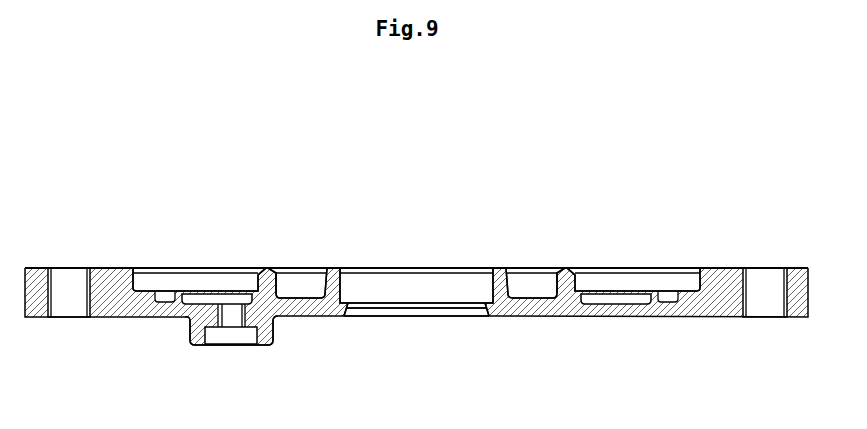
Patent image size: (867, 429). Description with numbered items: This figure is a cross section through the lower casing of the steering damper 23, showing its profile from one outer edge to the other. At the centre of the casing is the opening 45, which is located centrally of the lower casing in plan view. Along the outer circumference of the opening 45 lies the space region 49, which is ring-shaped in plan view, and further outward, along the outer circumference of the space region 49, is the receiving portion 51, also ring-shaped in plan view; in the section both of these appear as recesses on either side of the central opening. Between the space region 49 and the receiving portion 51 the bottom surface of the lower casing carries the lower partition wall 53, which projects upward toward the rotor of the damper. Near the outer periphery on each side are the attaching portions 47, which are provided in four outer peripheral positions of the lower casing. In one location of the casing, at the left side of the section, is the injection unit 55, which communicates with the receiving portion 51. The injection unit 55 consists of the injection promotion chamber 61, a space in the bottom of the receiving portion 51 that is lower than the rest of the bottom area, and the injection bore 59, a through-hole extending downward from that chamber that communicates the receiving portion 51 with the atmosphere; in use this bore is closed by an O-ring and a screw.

The steering damper 23 is at (707, 202).
The opening 45 is at (446, 307).
The attaching portions 47 is at (60, 310).
The space region 49 is at (285, 292).
The receiving portion 51 is at (160, 287).
The lower partition wall 53 is at (265, 268).
The injection unit 55 is at (191, 346).
The injection bore 59 is at (233, 335).
The injection promotion chamber 61 is at (200, 294).